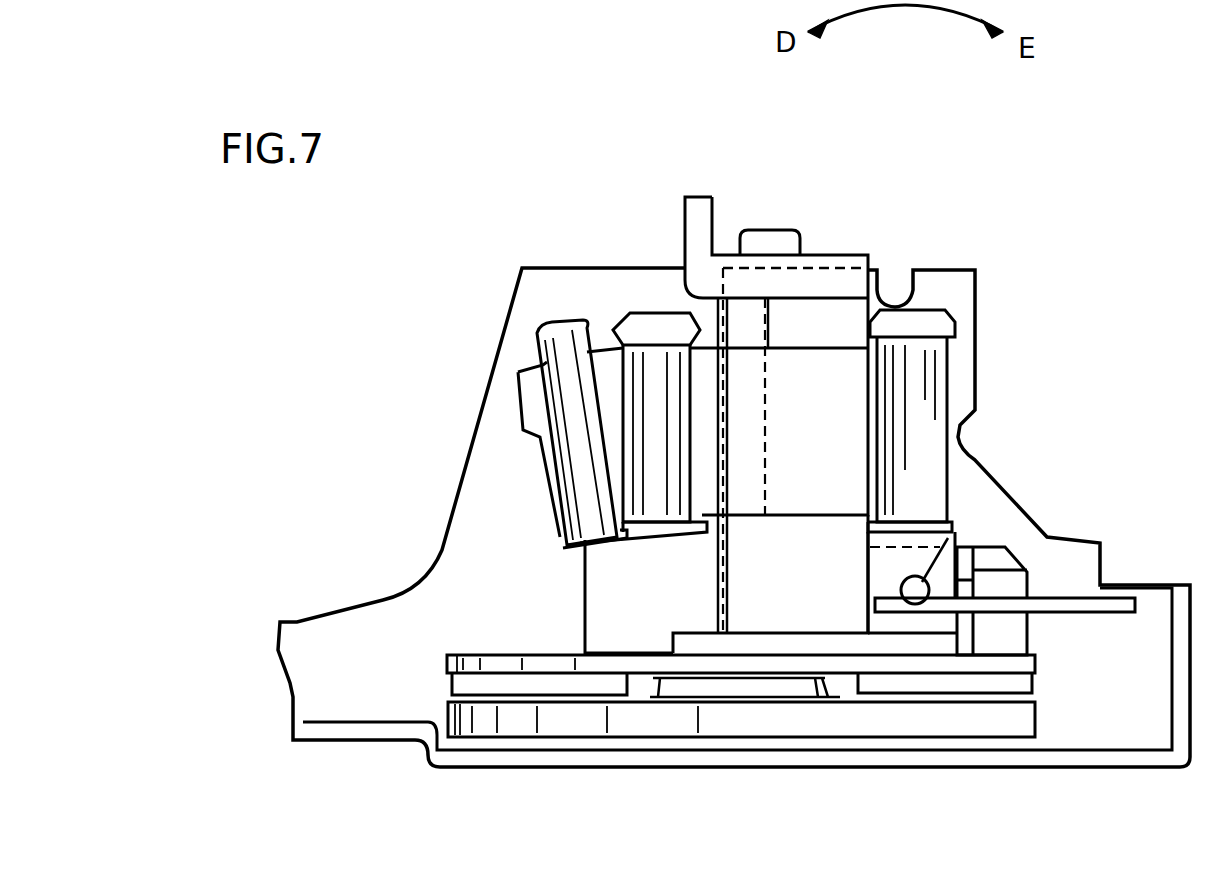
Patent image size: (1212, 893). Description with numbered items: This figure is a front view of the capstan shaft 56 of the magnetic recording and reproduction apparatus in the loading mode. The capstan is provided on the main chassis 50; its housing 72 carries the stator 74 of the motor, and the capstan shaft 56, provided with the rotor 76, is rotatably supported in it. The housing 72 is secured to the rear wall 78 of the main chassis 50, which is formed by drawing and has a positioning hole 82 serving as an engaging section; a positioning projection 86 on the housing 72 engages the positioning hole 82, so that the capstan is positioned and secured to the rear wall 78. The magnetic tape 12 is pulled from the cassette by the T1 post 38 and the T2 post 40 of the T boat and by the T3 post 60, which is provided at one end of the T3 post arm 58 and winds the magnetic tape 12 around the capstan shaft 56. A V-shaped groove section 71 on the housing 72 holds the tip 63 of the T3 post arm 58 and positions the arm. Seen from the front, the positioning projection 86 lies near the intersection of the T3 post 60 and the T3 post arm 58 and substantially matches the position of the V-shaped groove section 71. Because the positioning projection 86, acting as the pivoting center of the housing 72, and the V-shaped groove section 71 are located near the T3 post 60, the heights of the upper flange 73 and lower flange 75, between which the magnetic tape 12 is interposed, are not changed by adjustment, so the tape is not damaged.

The magnetic tape 12 is at (537, 440).
The T1 post 38 is at (543, 350).
The T2 post 40 is at (660, 507).
The main chassis 50 is at (768, 770).
The capstan shaft 56 is at (765, 582).
The T3 post arm 58 is at (1082, 612).
The T3 post 60 is at (925, 378).
The tip 63 is at (963, 603).
The V-shaped groove section 71 is at (1033, 570).
The housing 72 is at (822, 318).
The upper flange 73 is at (925, 323).
The stator 74 is at (933, 667).
The lower flange 75 is at (910, 520).
The rotor 76 is at (590, 723).
The rear wall 78 is at (595, 282).
The positioning hole 82 is at (915, 587).
The positioning projection 86 is at (952, 553).